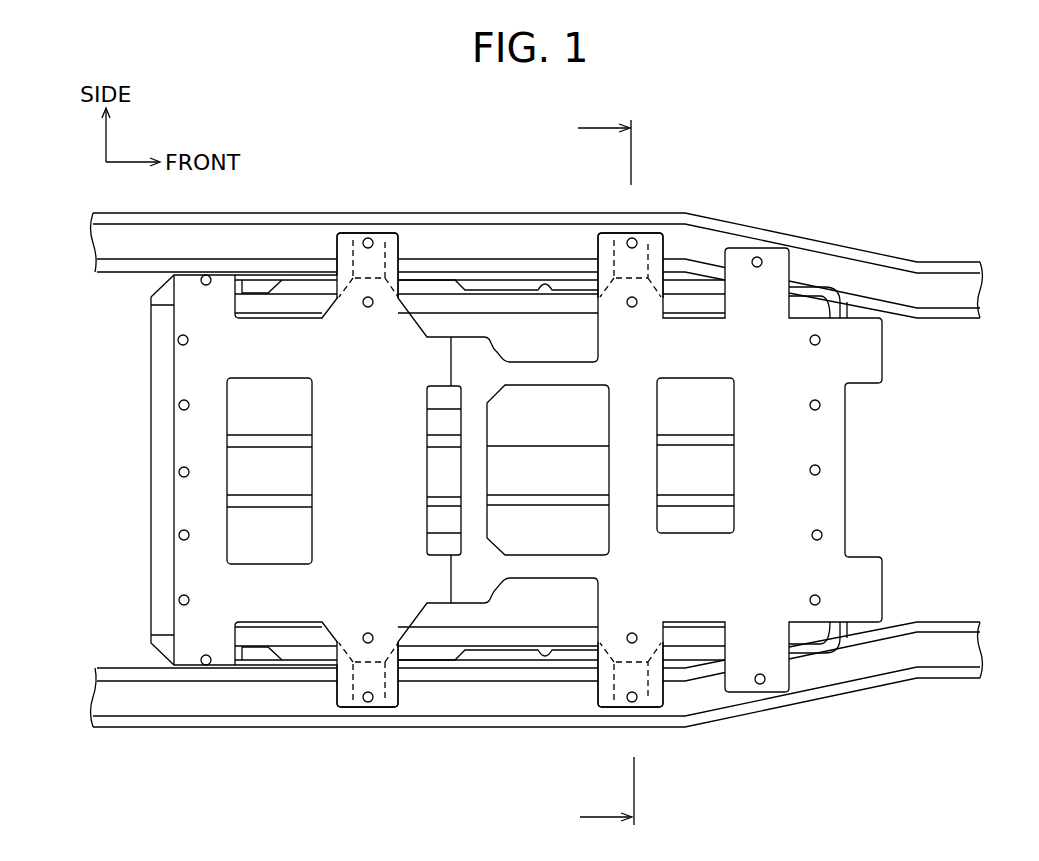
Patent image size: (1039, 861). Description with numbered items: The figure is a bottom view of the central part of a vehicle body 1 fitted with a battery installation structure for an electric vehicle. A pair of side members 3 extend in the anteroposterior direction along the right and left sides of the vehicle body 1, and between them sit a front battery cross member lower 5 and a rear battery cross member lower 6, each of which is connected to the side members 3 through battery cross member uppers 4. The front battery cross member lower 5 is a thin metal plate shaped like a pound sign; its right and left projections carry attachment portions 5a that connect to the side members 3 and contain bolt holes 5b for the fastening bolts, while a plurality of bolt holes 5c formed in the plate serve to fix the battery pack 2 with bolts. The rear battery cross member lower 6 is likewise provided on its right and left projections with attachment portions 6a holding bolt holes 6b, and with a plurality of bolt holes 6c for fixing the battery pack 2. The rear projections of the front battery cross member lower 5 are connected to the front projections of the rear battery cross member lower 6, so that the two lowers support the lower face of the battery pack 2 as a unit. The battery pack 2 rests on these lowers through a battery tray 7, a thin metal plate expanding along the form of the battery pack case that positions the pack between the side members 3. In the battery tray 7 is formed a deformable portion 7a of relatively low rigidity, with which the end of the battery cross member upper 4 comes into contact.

The vehicle body 1 is at (781, 150).
The battery pack 2 is at (545, 608).
The side members 3 is at (300, 211).
The battery cross member uppers 4 is at (393, 247).
The front battery cross member lower 5 is at (888, 363).
The attachment portions 5a is at (607, 238).
The bolt holes 5b is at (631, 237).
The bolt holes 5c is at (822, 538).
The rear battery cross member lower 6 is at (170, 387).
The attachment portions 6a is at (349, 238).
The bolt holes 6b is at (368, 237).
The bolt holes 6c is at (179, 472).
The battery tray 7 is at (482, 657).
The deformable portion 7a is at (402, 275).